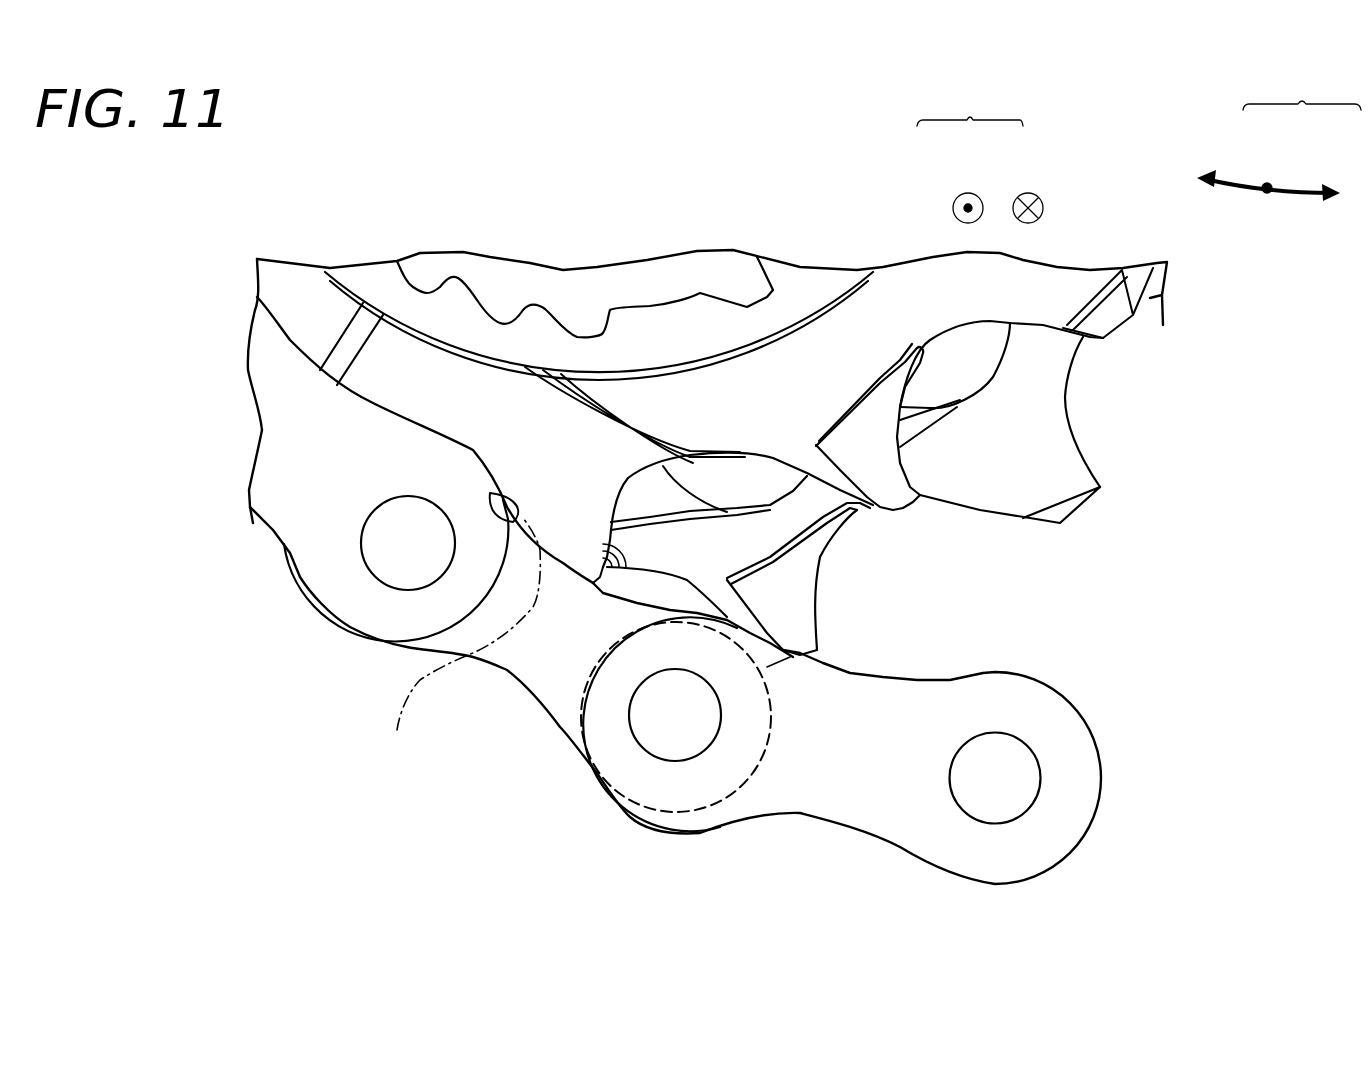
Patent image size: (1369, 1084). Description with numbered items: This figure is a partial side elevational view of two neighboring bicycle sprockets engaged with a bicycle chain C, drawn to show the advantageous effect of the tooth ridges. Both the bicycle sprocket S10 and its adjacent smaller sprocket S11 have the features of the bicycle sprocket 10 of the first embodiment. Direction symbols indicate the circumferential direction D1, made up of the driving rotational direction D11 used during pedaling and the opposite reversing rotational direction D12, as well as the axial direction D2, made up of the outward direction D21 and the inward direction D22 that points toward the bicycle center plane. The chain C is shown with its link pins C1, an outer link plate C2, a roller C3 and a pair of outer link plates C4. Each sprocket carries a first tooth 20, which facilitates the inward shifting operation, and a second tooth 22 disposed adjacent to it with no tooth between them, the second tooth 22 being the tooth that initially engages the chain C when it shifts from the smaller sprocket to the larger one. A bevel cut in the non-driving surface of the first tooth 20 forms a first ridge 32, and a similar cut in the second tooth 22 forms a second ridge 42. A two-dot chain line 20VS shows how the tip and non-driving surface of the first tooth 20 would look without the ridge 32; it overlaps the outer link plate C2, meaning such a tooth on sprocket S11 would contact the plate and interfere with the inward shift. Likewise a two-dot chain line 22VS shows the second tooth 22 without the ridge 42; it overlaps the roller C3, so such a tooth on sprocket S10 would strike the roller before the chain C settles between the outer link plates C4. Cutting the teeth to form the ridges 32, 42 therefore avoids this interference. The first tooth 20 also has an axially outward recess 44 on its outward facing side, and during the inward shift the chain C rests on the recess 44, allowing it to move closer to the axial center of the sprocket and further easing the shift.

The bicycle sprocket 10 is at (675, 416).
The bicycle sprocket S10 is at (1102, 489).
The bicycle sprocket S11 is at (257, 305).
The bicycle chain C is at (297, 595).
The link pin C1 is at (360, 543).
The outer link plate C2 is at (517, 687).
The roller C3 is at (667, 830).
The outer link plates C4 is at (830, 823).
The first tooth 20 is at (485, 680).
The two-dot chain line 20VS is at (452, 642).
The second tooth 22 is at (900, 514).
The two-dot chain line 22VS is at (757, 670).
The first ridge 32 is at (490, 493).
The second ridge 42 is at (697, 613).
The axially outward recess 44 is at (627, 623).
The circumferential direction D1 is at (1279, 134).
The driving rotational direction D11 is at (1238, 183).
The reversing rotational direction D12 is at (1303, 190).
The axial direction D2 is at (980, 153).
The outward direction D21 is at (968, 193).
The inward direction D22 is at (1028, 193).